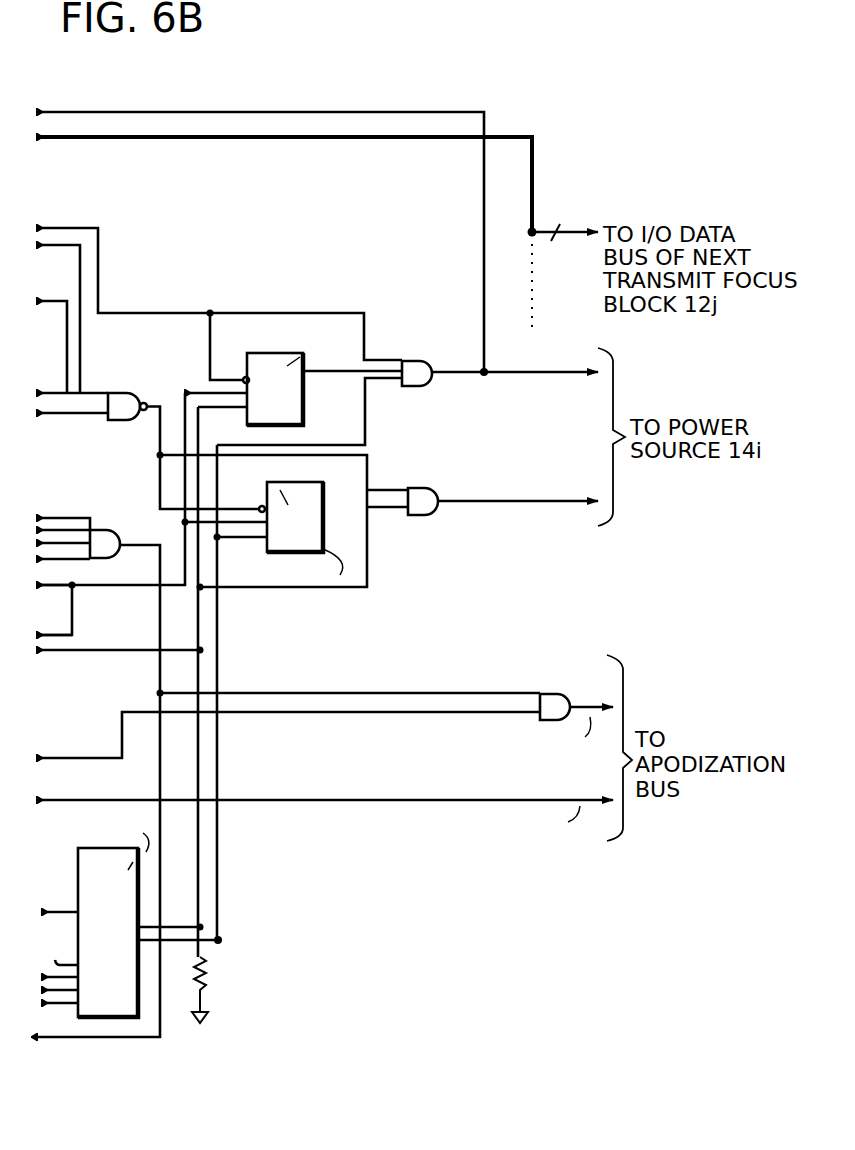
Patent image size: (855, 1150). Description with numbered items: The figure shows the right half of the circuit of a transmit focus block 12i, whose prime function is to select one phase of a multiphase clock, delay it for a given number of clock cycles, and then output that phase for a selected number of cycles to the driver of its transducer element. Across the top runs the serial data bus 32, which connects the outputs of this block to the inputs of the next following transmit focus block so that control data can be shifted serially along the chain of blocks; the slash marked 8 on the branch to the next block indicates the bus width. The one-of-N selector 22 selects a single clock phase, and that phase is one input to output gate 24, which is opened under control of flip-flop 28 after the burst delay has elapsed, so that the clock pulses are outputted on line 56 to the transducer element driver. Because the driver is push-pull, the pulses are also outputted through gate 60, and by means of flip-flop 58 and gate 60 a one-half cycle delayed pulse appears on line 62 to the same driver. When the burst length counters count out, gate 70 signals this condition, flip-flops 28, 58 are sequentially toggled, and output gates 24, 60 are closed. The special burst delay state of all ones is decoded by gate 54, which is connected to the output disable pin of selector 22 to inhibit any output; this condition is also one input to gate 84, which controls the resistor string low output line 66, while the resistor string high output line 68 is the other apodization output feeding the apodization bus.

The transmit focus block 12i is at (525, 92).
The data bus 32 is at (503, 136).
The 8-bit data bus width indicator 8 is at (565, 219).
The gate 60 is at (418, 361).
The line 62 is at (538, 371).
The flip-flop 58 is at (258, 411).
The gate 70 is at (122, 421).
The flip-flop 28 is at (282, 488).
The output gate 24 is at (424, 488).
The line 56 is at (526, 500).
The gate 54 is at (102, 529).
The gate 84 is at (558, 694).
The line (RSL, resistor string low) 66 is at (582, 705).
The line (RSH-L, resistor string high) 68 is at (568, 800).
The one-of-N selector 22 is at (88, 874).